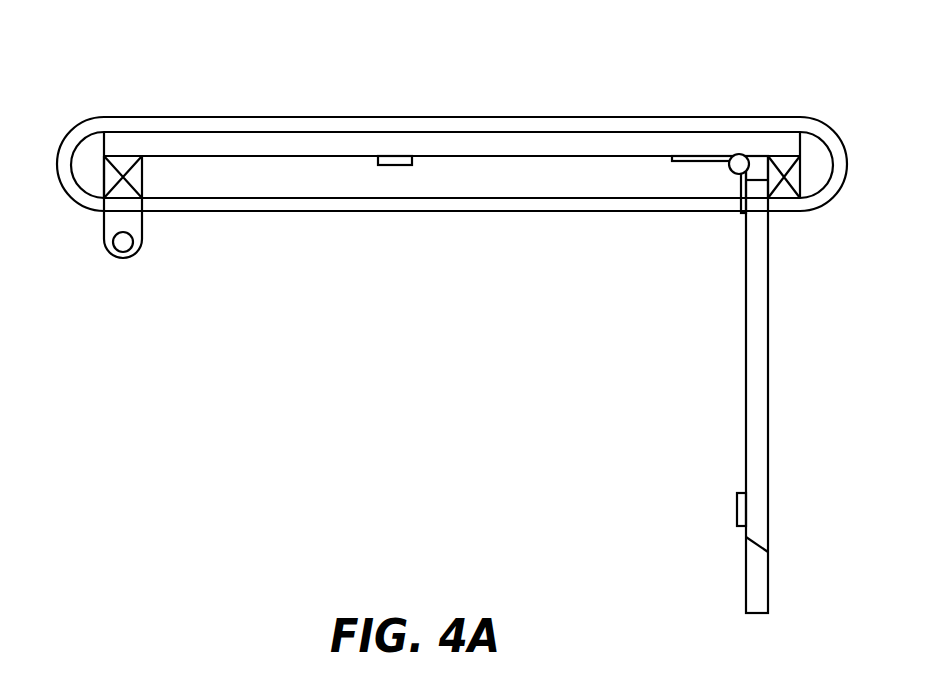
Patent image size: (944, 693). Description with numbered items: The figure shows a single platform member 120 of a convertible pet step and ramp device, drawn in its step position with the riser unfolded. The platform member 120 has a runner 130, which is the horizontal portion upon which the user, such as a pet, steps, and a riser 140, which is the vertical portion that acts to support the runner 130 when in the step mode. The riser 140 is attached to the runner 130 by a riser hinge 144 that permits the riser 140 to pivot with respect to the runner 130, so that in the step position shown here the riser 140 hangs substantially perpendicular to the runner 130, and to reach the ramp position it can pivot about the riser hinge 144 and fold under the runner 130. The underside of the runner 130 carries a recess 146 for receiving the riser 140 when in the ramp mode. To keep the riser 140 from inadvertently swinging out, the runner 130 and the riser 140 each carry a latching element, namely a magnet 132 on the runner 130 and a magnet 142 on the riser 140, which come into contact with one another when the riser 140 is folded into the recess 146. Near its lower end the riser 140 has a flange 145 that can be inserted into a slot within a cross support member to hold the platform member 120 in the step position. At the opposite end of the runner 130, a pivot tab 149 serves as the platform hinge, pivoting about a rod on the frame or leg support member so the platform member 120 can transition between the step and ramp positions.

The platform member 120 is at (175, 47).
The runner 130 is at (603, 120).
The magnet 132 is at (392, 164).
The recess 146 is at (258, 180).
The pivot tab 149 is at (123, 245).
The riser 140 is at (745, 377).
The riser hinge 144 is at (732, 172).
The magnet 142 is at (737, 505).
The flange 145 is at (750, 578).